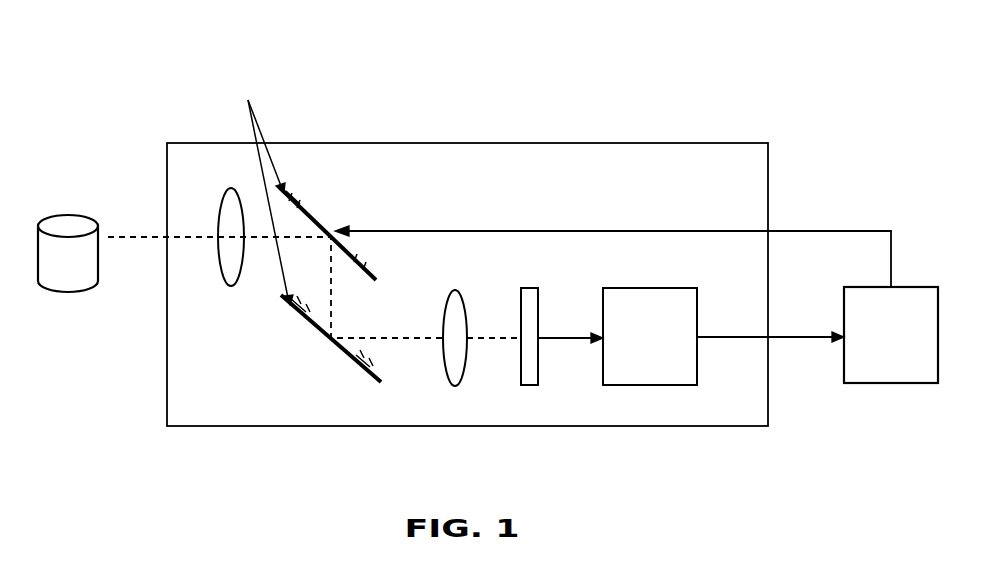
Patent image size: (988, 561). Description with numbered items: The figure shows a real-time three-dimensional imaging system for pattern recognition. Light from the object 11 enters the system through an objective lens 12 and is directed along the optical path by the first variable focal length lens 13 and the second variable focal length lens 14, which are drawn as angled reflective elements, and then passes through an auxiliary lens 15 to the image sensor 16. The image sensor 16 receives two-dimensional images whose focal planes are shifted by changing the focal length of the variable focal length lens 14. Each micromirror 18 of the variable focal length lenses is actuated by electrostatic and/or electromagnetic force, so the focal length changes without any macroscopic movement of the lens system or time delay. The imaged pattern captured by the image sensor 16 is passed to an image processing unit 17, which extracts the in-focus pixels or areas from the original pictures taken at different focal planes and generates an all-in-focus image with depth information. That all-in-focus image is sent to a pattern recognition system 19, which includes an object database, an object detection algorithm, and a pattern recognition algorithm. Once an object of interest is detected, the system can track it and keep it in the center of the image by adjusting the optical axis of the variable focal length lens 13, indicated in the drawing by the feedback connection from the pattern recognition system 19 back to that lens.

The object 11 is at (75, 215).
The objective lens 12 is at (218, 225).
The first variable focal length lens 13 is at (322, 220).
The second variable focal length lens 14 is at (323, 340).
The auxiliary lens 15 is at (445, 377).
The image sensor 16 is at (520, 377).
The image processing unit 17 is at (652, 385).
The micromirror 18 is at (261, 187).
The pattern recognition system 19 is at (845, 354).